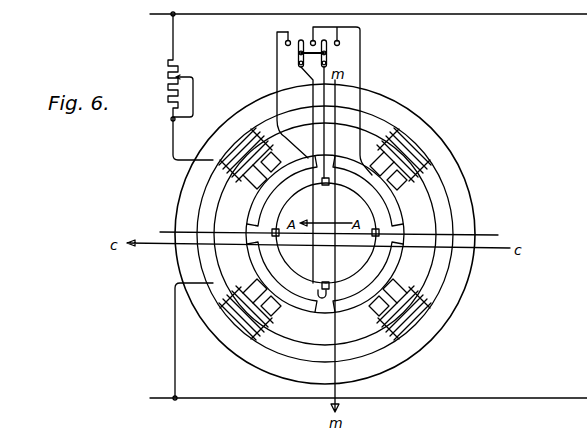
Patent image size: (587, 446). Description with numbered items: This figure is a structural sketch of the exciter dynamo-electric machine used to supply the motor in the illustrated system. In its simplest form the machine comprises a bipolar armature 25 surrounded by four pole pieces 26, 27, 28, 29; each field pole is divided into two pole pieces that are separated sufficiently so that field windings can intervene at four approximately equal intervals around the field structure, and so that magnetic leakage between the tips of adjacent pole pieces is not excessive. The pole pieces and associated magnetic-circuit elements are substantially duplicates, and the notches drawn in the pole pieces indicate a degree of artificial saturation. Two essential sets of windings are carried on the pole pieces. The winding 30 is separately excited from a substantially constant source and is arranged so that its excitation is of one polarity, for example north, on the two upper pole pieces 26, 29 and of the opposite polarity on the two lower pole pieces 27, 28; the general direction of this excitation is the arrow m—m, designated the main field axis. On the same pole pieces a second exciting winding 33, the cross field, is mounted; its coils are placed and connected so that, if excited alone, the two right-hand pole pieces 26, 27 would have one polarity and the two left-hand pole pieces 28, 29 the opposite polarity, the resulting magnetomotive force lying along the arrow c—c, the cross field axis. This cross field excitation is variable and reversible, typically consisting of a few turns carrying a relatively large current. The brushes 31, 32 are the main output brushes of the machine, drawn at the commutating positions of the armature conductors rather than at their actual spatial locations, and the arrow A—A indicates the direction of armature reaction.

The bipolar armature 25 is at (330, 177).
The pole piece 26 is at (382, 160).
The pole piece 27 is at (398, 292).
The pole piece 28 is at (254, 288).
The pole piece 29 is at (258, 178).
The winding 30 is at (250, 176).
The brush 31 is at (272, 228).
The brush 32 is at (377, 228).
The cross field winding 33 is at (283, 158).